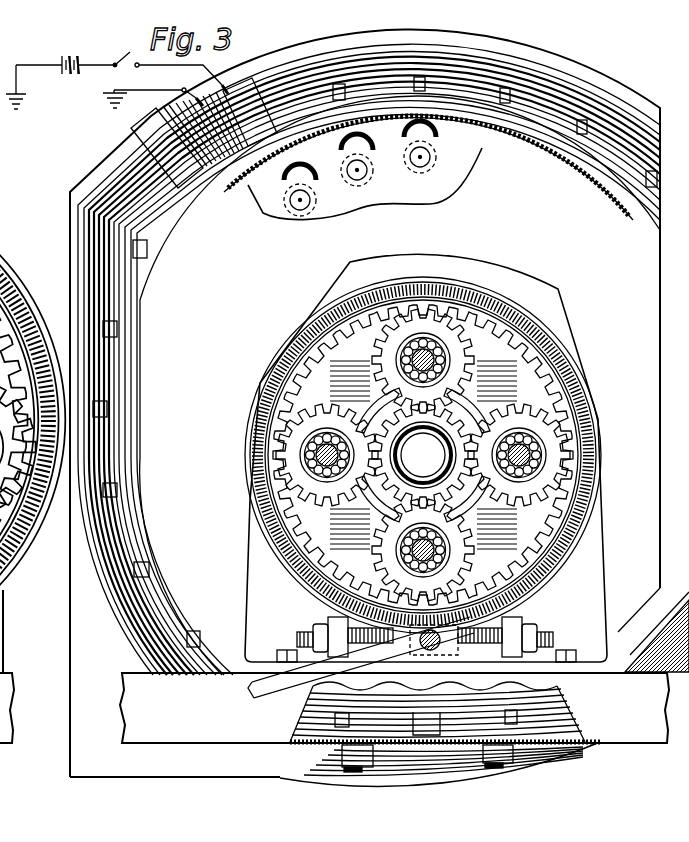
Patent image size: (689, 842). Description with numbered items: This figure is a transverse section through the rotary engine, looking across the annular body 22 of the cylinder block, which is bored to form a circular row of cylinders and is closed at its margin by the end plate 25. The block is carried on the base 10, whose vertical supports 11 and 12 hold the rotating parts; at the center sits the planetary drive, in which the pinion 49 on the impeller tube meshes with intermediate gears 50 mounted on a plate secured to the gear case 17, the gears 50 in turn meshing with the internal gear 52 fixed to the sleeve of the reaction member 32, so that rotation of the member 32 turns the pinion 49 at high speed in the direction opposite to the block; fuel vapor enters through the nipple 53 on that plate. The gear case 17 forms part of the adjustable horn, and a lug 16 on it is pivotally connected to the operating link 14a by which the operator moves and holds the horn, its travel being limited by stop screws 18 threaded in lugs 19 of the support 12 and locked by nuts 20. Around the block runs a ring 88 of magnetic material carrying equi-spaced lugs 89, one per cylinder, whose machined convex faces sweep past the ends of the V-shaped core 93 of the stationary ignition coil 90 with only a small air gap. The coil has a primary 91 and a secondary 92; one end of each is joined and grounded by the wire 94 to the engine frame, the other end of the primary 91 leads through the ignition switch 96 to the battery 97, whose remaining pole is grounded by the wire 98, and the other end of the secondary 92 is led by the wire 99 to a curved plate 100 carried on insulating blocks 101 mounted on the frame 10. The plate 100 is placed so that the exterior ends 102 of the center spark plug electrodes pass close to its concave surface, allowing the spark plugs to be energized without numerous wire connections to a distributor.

The base 10 is at (195, 742).
The vertical support 11 is at (0, 630).
The vertical support 12 is at (250, 528).
The operating link 14a is at (284, 692).
The lug 16 is at (443, 637).
The gear case 17 is at (330, 592).
The screws 18 is at (300, 640).
The lugs 19 is at (336, 622).
The nuts 20 is at (316, 626).
The annular body 22 is at (467, 133).
The end plate 25 is at (575, 245).
The reaction member 32 is at (388, 165).
The pinion 49 is at (375, 508).
The intermediate gears 50 is at (575, 437).
The internal gear 52 is at (548, 377).
The nipple 53 is at (423, 455).
The ring 88 is at (177, 213).
The lugs 89 is at (147, 242).
The ignition coil 90 is at (227, 81).
The primary 91 is at (201, 90).
The secondary 92 is at (182, 116).
The V-shaped core 93 is at (162, 147).
The wire 94 is at (143, 90).
The ignition switch 96 is at (128, 57).
The battery 97 is at (73, 57).
The wire 98 is at (33, 63).
The wire 99 is at (95, 177).
The plate 100 is at (457, 745).
The insulating blocks 101 is at (360, 773).
The exterior ends 102 is at (557, 747).